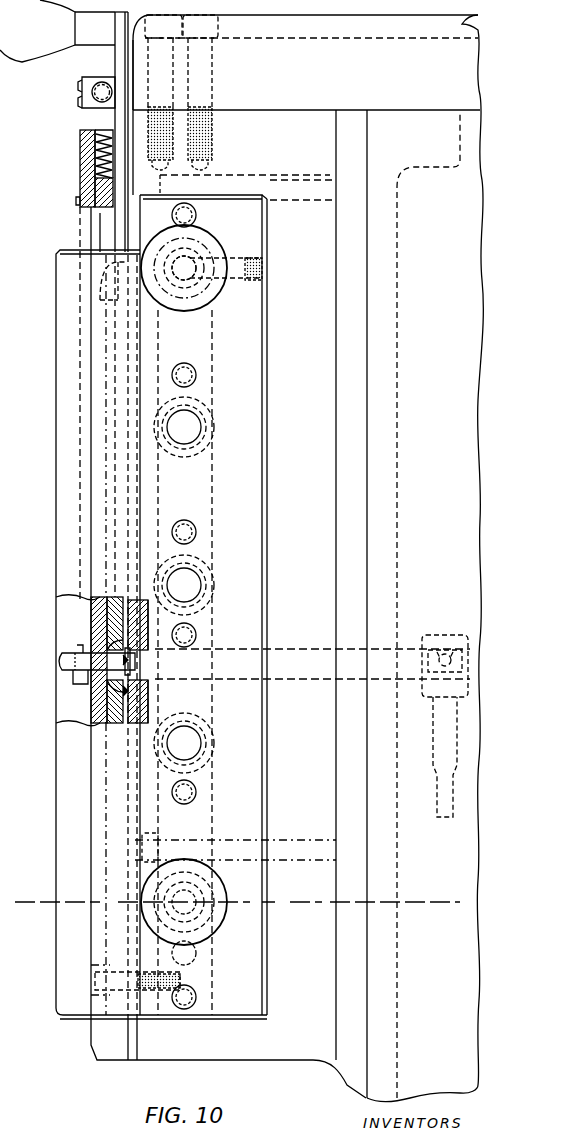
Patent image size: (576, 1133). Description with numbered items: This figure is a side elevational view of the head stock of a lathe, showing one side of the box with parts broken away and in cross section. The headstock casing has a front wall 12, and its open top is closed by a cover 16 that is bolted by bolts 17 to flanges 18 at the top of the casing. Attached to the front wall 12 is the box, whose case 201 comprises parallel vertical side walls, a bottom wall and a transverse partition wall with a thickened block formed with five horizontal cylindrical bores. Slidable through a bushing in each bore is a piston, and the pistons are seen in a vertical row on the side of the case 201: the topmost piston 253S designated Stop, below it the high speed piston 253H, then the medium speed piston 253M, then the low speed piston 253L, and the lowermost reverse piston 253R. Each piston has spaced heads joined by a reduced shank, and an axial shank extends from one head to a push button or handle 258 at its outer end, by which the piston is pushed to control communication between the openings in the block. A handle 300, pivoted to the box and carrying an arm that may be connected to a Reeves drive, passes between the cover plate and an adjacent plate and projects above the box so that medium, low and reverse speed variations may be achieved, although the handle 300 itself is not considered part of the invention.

The front wall 12 is at (385, 452).
The cover 16 is at (478, 30).
The bolts 17 is at (212, 78).
The flanges 18 is at (300, 135).
The handle 300 is at (117, 53).
The case 201 is at (317, 1066).
The topmost piston 253S is at (227, 244).
The push button or handle 258 is at (208, 290).
The high speed piston 253H is at (218, 418).
The medium speed piston 253M is at (218, 573).
The low speed piston 253L is at (218, 745).
The reverse piston 253R is at (229, 909).